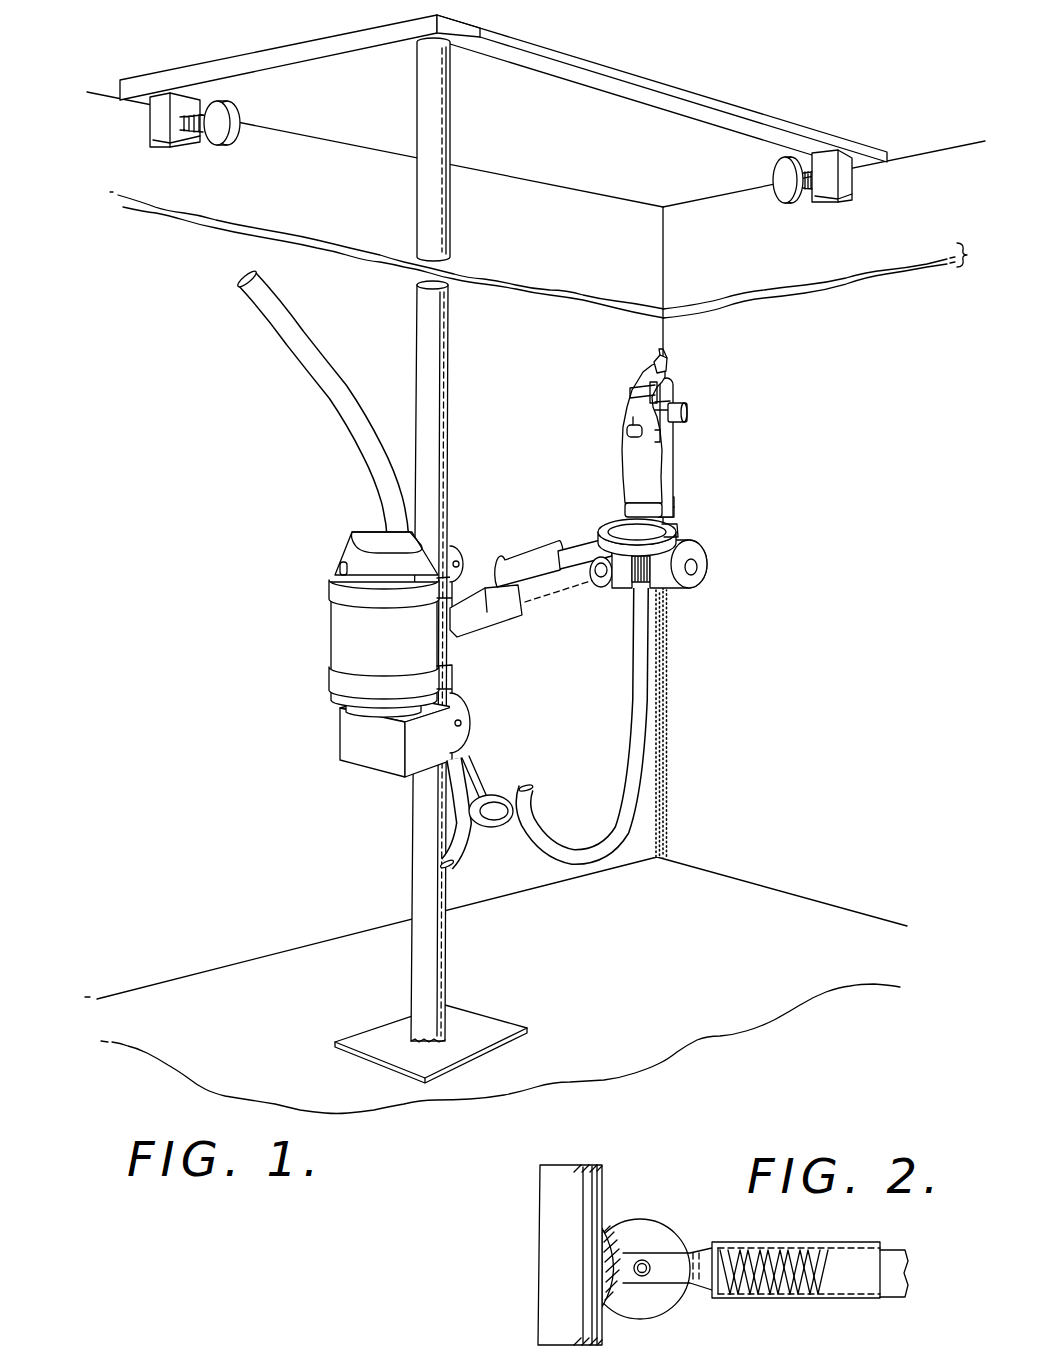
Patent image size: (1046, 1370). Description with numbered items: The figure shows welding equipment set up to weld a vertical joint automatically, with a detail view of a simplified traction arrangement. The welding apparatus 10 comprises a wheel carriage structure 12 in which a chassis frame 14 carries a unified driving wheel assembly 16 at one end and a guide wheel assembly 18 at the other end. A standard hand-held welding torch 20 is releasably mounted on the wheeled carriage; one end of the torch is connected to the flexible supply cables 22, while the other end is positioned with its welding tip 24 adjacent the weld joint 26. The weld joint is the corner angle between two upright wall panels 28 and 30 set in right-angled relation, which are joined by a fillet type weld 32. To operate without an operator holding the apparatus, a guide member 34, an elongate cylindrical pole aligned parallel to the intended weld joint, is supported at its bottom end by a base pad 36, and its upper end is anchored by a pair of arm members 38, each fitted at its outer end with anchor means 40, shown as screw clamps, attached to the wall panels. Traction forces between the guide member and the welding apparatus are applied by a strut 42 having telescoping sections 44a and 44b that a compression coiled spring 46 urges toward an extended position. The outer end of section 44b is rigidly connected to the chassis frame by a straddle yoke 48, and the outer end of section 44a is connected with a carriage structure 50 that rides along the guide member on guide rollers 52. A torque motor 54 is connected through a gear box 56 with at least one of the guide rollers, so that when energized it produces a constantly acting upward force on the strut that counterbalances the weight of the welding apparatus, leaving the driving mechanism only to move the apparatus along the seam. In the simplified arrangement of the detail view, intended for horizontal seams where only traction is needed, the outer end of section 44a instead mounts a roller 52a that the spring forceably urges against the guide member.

In FIG. 1, the welding apparatus 10 is at (711, 460).
In FIG. 1, the wheel carriage structure 12 is at (674, 485).
In FIG. 1, the chassis frame 14 is at (677, 447).
In FIG. 1, the driving wheel assembly 16 is at (706, 563).
In FIG. 1, the guide wheel assembly 18 is at (681, 385).
In FIG. 1, the welding torch 20 is at (621, 452).
In FIG. 1, the flexible supply cables 22 is at (622, 783).
In FIG. 1, the welding tip 24 is at (657, 358).
In FIG. 1, the weld joint 26 is at (665, 338).
In FIG. 1, the upright wall panel 28 is at (543, 193).
In FIG. 1, the upright wall panel 30 is at (693, 213).
In FIG. 1, the fillet type weld 32 is at (668, 783).
In FIG. 1, the guide member 34 is at (420, 198).
In FIG. 2, the guide member 34 is at (550, 1313).
In FIG. 1, the base pad 36 is at (484, 1024).
In FIG. 1, the arm members 38 is at (260, 55).
In FIG. 1, the anchor means 40 is at (151, 130).
In FIG. 1, the strut 42 is at (517, 568).
In FIG. 2, the strut 42 is at (828, 1299).
In FIG. 1, the telescoping section 44a is at (545, 602).
In FIG. 2, the telescoping section 44a is at (825, 1245).
In FIG. 1, the telescoping section 44b is at (583, 587).
In FIG. 2, the telescoping section 44b is at (907, 1266).
In FIG. 2, the compression coiled spring 46 is at (748, 1298).
In FIG. 1, the straddle yoke 48 is at (612, 522).
In FIG. 1, the carriage structure 50 is at (454, 682).
In FIG. 1, the guide rollers 52 is at (455, 552).
In FIG. 2, the roller 52a is at (641, 1222).
In FIG. 1, the torque motor 54 is at (345, 643).
In FIG. 1, the gear box 56 is at (348, 738).